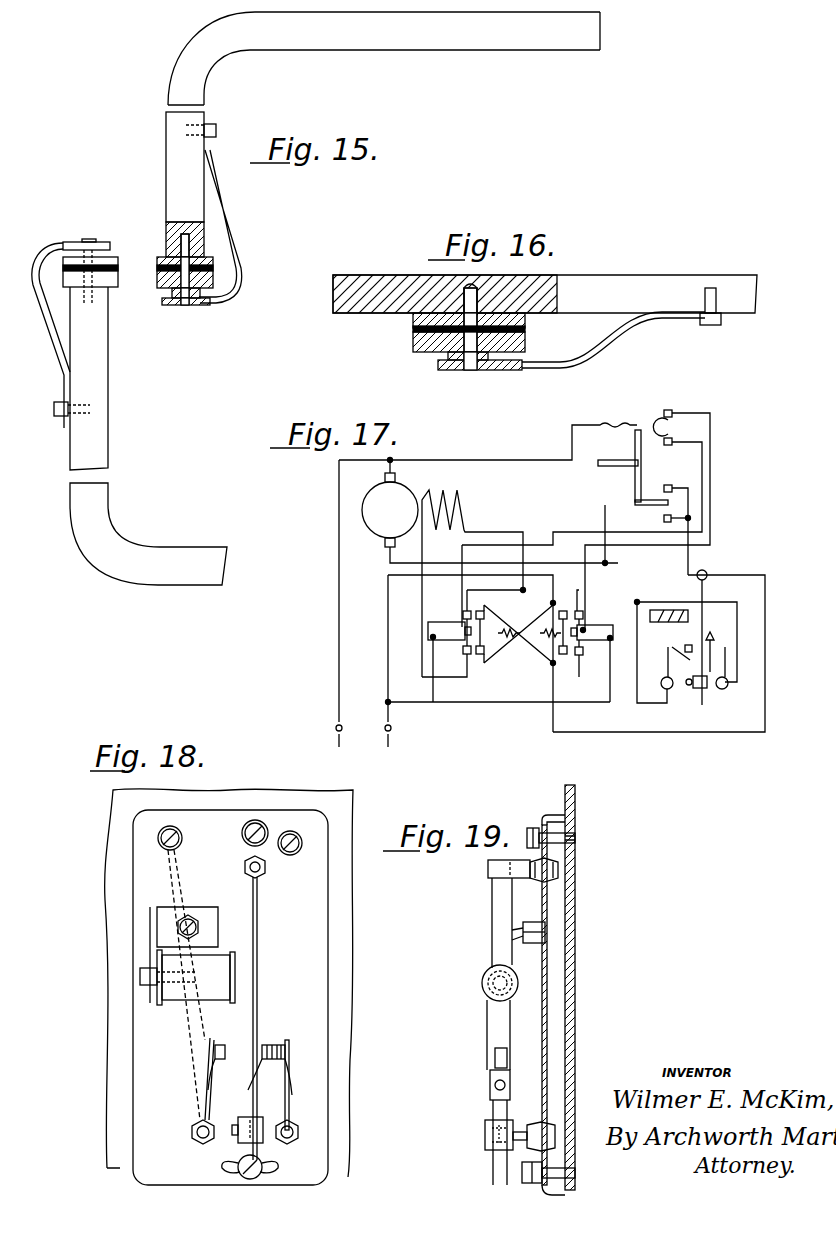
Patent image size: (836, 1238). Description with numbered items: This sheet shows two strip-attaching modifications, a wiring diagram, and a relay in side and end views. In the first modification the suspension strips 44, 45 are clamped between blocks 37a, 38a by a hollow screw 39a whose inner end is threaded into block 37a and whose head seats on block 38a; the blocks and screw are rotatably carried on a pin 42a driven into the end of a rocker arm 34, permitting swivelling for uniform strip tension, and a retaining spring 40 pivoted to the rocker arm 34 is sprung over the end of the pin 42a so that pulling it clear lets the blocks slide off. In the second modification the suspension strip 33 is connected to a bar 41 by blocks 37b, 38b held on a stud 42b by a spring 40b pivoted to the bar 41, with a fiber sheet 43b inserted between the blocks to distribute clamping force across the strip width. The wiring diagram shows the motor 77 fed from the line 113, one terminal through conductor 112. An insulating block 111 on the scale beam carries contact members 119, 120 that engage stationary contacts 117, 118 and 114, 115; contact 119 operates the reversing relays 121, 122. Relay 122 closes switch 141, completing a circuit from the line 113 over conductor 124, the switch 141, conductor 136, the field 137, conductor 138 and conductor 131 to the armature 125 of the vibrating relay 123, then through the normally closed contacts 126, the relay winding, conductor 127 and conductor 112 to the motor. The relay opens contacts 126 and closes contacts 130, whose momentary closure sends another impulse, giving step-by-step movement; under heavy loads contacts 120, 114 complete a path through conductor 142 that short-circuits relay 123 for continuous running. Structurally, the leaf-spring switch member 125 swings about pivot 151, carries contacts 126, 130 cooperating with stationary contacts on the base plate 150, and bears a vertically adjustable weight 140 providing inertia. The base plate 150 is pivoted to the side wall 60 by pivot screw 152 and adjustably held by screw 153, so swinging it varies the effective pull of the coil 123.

In FIG. 15, the rocker arm 34 is at (166, 151).
In FIG. 15, the suspension strip 45 is at (70, 262).
In FIG. 15, the clamping block 37a is at (163, 258).
In FIG. 15, the pin 42a is at (186, 243).
In FIG. 15, the suspension strip 44 is at (213, 270).
In FIG. 15, the retaining spring 40 is at (243, 283).
In FIG. 15, the hollow screw 39a is at (172, 300).
In FIG. 15, the clamping block 38a is at (207, 300).
In FIG. 16, the bar 41 is at (598, 293).
In FIG. 16, the clamping block 37b is at (413, 329).
In FIG. 16, the clamping block 38b is at (413, 348).
In FIG. 16, the fiber sheet 43b is at (527, 329).
In FIG. 16, the stud 42b is at (462, 366).
In FIG. 16, the suspension strip 33 is at (505, 356).
In FIG. 16, the spring 40b is at (560, 364).
In FIG. 17, the motor 77 is at (400, 502).
In FIG. 17, the field 137 is at (465, 505).
In FIG. 17, the conductor 136 is at (500, 527).
In FIG. 17, the conductor 112 is at (390, 563).
In FIG. 17, the conductor 124 is at (388, 617).
In FIG. 17, the line 113 is at (340, 742).
In FIG. 17, the reversing relay 121 is at (445, 624).
In FIG. 17, the conductor 138 is at (450, 680).
In FIG. 17, the switch 141 is at (548, 657).
In FIG. 17, the stationary contact 117 is at (678, 412).
In FIG. 17, the contact member 119 is at (658, 420).
In FIG. 17, the stationary contact 118 is at (673, 441).
In FIG. 17, the insulating block 111 is at (635, 485).
In FIG. 17, the stationary contact 114 is at (672, 480).
In FIG. 17, the contact member 120 is at (630, 503).
In FIG. 17, the stationary contact 115 is at (664, 519).
In FIG. 17, the conductor 142 is at (612, 565).
In FIG. 17, the conductor 127 is at (637, 600).
In FIG. 17, the reversing relay 122 is at (600, 625).
In FIG. 17, the conductor 131 is at (672, 735).
In FIG. 17, the vibrating relay 123 is at (672, 607).
In FIG. 18, the vibrating relay 123 is at (180, 1003).
In FIG. 19, the vibrating relay 123 is at (482, 980).
In FIG. 17, the switch member 125 is at (705, 602).
In FIG. 18, the switch member 125 is at (257, 912).
In FIG. 19, the switch member 125 is at (492, 906).
In FIG. 17, the contacts 130 is at (688, 645).
In FIG. 18, the contacts 130 is at (230, 1045).
In FIG. 17, the contacts 126 is at (710, 638).
In FIG. 18, the contacts 126 is at (280, 1043).
In FIG. 19, the contacts 126 is at (495, 1056).
In FIG. 17, the weight 140 is at (700, 683).
In FIG. 18, the weight 140 is at (238, 1140).
In FIG. 19, the weight 140 is at (485, 1130).
In FIG. 18, the base plate 150 is at (318, 982).
In FIG. 19, the base plate 150 is at (547, 1012).
In FIG. 18, the pivot screw 152 is at (242, 831).
In FIG. 19, the pivot screw 152 is at (575, 839).
In FIG. 18, the pivot 151 is at (265, 868).
In FIG. 19, the pivot 151 is at (492, 872).
In FIG. 18, the screw 153 is at (264, 1170).
In FIG. 19, the screw 153 is at (578, 1165).
In FIG. 19, the side wall 60 is at (575, 980).